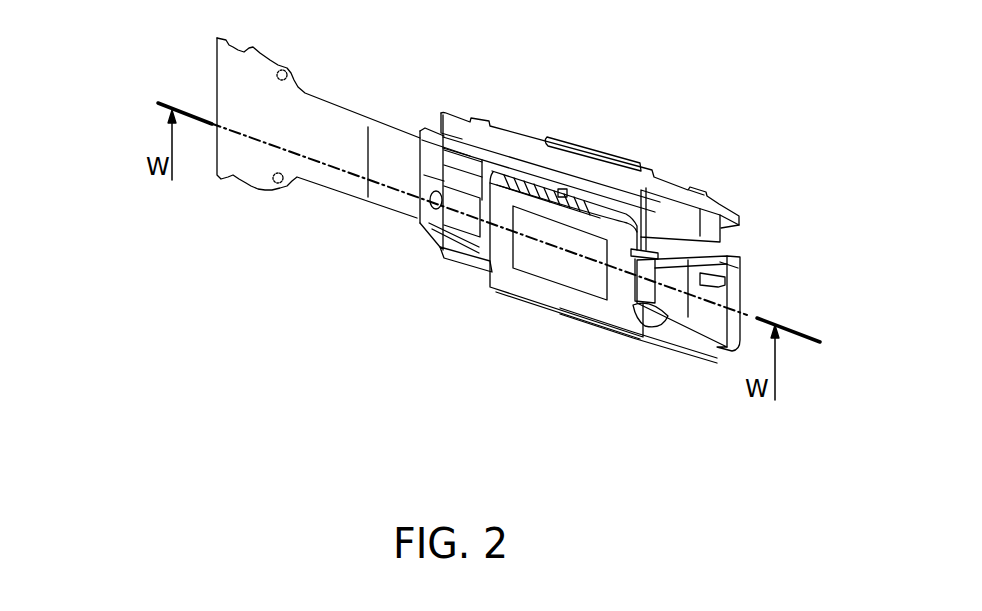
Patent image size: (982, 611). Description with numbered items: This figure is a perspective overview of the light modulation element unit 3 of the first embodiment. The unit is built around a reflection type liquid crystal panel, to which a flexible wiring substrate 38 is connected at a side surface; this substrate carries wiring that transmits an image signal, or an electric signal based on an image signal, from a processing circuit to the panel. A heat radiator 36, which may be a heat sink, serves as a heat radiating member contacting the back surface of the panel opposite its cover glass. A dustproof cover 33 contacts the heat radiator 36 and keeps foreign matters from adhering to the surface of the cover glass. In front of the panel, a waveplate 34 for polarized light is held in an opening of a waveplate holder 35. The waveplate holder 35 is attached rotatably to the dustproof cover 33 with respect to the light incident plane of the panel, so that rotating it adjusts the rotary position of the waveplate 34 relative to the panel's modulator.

The light modulation element unit 3 is at (553, 83).
The dustproof cover 33 is at (633, 180).
The waveplate 34 is at (553, 270).
The waveplate holder 35 is at (611, 307).
The heat radiator 36 is at (657, 172).
The flexible wiring substrate 38 is at (317, 95).